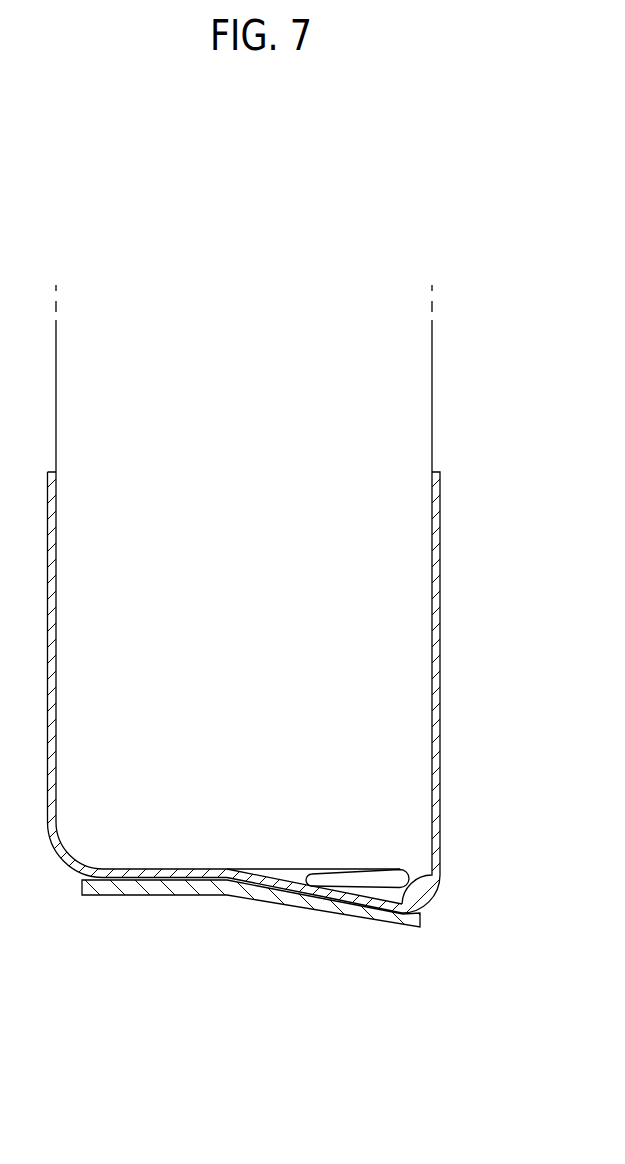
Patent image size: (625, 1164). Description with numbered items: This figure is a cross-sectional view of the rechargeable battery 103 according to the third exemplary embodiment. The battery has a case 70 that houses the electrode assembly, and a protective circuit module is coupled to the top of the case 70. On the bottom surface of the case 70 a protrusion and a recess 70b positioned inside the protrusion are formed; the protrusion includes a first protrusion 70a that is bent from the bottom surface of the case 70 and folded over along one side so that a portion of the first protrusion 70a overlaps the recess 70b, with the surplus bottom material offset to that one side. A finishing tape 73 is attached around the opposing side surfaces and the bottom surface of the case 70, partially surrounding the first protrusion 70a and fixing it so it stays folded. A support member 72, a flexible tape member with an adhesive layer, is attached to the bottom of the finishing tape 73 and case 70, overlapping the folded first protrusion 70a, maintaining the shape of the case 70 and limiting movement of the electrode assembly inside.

The rechargeable battery 103 is at (268, 207).
The case 70 is at (436, 390).
The finishing tape 73 is at (441, 640).
The first protrusion 70a is at (345, 903).
The recess 70b is at (296, 874).
The support member 72 is at (185, 896).